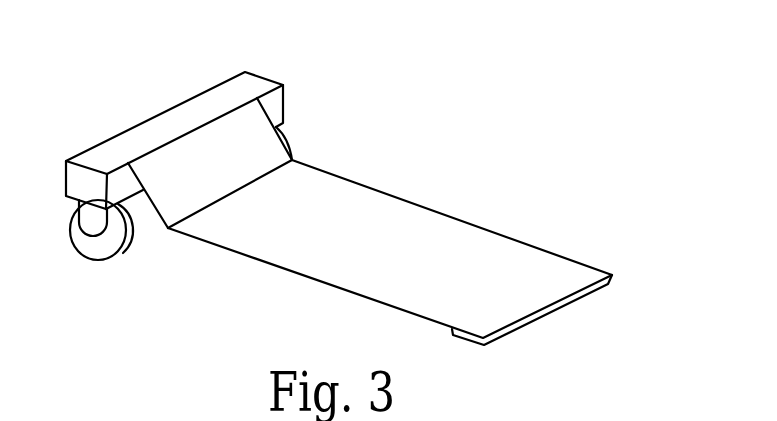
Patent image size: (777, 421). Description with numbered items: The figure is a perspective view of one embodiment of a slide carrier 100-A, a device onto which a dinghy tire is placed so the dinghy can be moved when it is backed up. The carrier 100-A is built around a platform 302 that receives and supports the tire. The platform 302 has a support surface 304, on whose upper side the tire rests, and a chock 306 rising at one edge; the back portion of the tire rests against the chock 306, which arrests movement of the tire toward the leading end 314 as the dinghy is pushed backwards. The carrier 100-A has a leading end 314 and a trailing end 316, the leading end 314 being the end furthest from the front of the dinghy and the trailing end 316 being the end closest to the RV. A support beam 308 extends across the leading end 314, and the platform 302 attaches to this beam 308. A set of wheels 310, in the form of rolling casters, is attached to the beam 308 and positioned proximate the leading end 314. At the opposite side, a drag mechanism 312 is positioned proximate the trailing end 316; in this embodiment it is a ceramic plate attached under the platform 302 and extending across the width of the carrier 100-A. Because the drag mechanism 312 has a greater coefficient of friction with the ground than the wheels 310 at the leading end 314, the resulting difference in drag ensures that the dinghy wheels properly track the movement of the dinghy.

The slide carrier 100-A is at (383, 209).
The platform 302 is at (472, 225).
The support surface 304 is at (385, 248).
The chock 306 is at (294, 158).
The support beam 308 is at (284, 85).
The set of wheels 310 is at (87, 262).
The drag mechanism 312 is at (468, 342).
The leading end 314 is at (322, 72).
The trailing end 316 is at (622, 250).